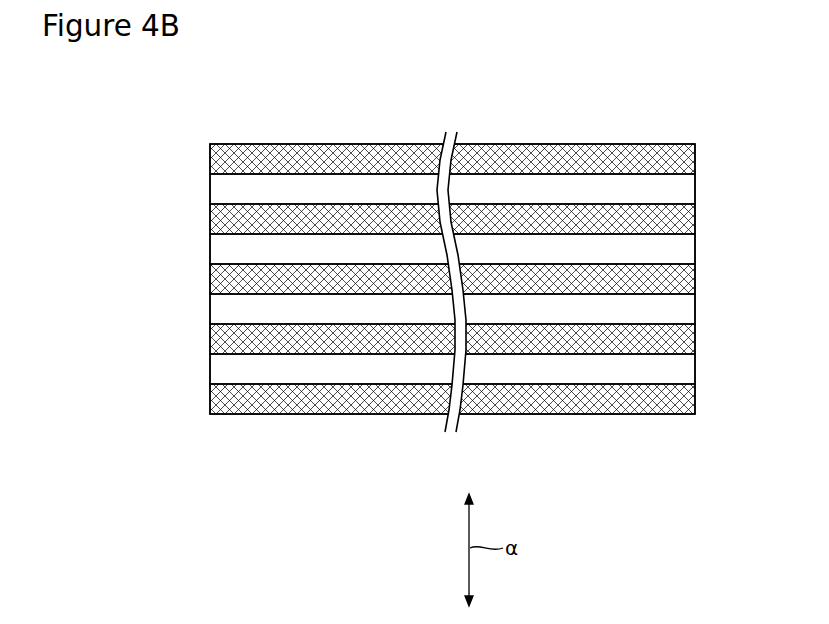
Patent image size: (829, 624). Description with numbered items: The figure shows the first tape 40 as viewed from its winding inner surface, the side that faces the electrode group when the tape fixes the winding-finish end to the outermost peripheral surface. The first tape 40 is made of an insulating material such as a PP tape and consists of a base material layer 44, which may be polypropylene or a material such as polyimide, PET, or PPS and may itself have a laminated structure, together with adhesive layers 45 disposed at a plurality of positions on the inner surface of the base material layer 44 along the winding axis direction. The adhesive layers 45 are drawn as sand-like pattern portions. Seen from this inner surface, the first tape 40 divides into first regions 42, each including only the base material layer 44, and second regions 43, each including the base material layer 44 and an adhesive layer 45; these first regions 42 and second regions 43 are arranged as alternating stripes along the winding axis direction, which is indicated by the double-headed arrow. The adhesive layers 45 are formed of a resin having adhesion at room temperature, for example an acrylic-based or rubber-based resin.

The first tape 40 is at (533, 143).
The first regions 42 is at (667, 187).
The second regions 43 is at (658, 146).
The base material layer 44 is at (673, 365).
The adhesive layers 45 is at (483, 141).